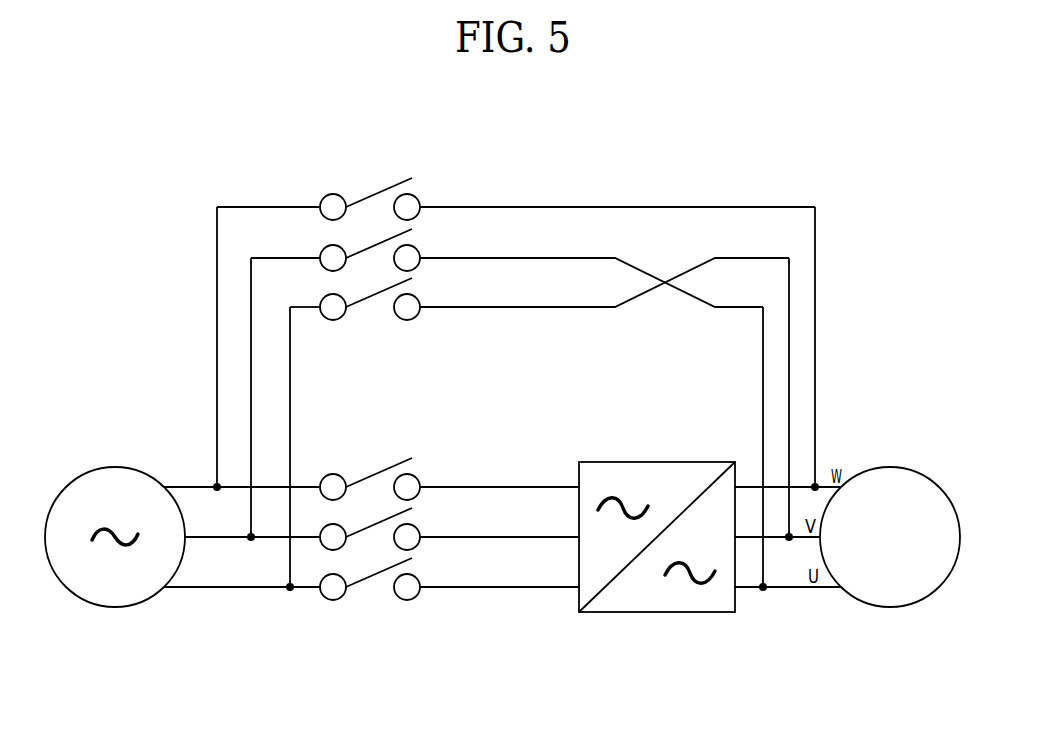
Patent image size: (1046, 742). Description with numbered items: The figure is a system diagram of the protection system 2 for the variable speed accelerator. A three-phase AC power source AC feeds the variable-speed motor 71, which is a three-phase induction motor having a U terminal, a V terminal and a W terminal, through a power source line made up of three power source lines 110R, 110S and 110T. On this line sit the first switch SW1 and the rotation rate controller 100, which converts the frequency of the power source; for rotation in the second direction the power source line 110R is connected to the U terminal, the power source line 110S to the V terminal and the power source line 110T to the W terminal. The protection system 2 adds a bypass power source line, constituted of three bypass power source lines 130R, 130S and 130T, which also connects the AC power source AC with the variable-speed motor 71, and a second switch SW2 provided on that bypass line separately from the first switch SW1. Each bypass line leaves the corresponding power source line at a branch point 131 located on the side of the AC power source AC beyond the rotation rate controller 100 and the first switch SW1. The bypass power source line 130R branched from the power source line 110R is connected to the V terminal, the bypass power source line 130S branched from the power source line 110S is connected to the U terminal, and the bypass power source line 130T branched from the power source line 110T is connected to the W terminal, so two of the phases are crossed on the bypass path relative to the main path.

The protection system 2 is at (614, 203).
The variable-speed motor 71 is at (889, 467).
The rotation rate controller 100 is at (643, 462).
The power source line 110T is at (461, 490).
The power source line 110S is at (466, 540).
The power source line 110R is at (472, 590).
The bypass power source line 130T is at (476, 210).
The bypass power source line 130S is at (486, 261).
The bypass power source line 130R is at (494, 310).
The branch point 131 is at (216, 492).
The AC power source AC is at (116, 467).
The first switch SW1 is at (370, 517).
The second switch SW2 is at (370, 234).